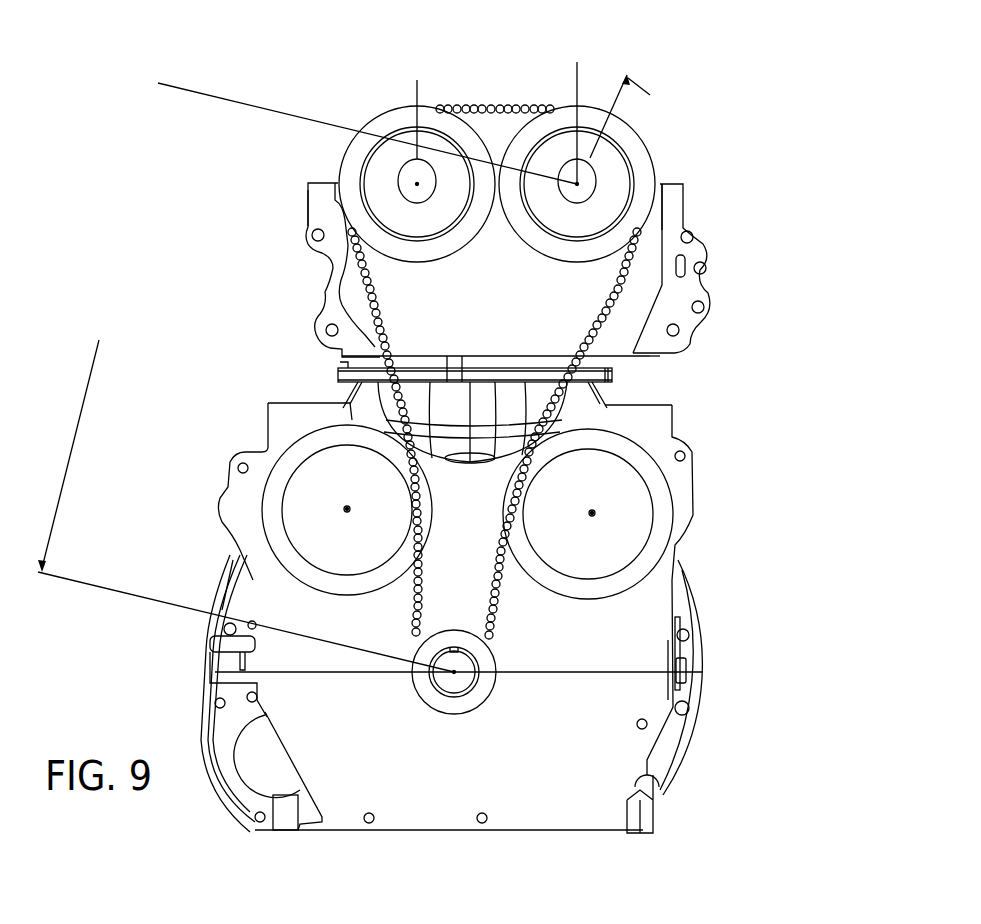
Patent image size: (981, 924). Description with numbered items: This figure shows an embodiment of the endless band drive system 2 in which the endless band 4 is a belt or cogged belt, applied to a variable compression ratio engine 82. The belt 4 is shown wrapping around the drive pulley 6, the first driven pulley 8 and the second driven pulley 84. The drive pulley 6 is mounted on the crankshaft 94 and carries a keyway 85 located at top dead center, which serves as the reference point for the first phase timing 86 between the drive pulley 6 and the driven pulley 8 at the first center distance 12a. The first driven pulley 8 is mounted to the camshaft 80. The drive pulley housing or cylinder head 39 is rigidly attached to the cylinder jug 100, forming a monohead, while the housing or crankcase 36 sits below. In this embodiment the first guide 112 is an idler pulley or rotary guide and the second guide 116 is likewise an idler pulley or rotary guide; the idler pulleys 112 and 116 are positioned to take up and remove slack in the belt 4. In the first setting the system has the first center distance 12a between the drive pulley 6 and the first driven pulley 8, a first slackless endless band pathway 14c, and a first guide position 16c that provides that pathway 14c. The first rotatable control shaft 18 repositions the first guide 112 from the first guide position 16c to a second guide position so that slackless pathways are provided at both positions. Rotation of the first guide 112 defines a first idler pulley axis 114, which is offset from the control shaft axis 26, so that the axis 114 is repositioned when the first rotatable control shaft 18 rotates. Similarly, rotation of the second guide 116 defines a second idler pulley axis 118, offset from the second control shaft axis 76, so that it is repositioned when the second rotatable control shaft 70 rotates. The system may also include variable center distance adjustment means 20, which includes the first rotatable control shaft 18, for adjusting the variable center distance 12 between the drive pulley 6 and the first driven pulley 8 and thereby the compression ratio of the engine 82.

The endless band drive system 2 is at (758, 372).
The endless band 4 is at (355, 250).
The drive pulley 6 is at (478, 698).
The first driven pulley 8 is at (640, 152).
The variable center distance 12 is at (161, 85).
The first center distance 12a is at (79, 432).
The first slackless endless band pathway 14c is at (372, 288).
The first guide position 16c is at (596, 499).
The first rotatable control shaft 18 is at (615, 497).
The variable center distance adjustment means 20 is at (752, 527).
The control shaft axis 26 is at (595, 512).
The crankcase 36 is at (658, 690).
The cylinder head 39 is at (676, 212).
The second rotatable control shaft 70 is at (340, 490).
The second control shaft axis 76 is at (347, 509).
The camshaft 80 is at (598, 182).
The variable compression ratio engine 82 is at (740, 289).
The second driven pulley 84 is at (352, 169).
The keyway 85 is at (493, 636).
The first phase timing 86 is at (577, 72).
The crankshaft 94 is at (440, 682).
The cylinder jug 100 is at (520, 358).
The first guide 112 is at (610, 560).
The first idler pulley axis 114 is at (595, 514).
The second guide 116 is at (367, 557).
The second idler pulley axis 118 is at (347, 509).